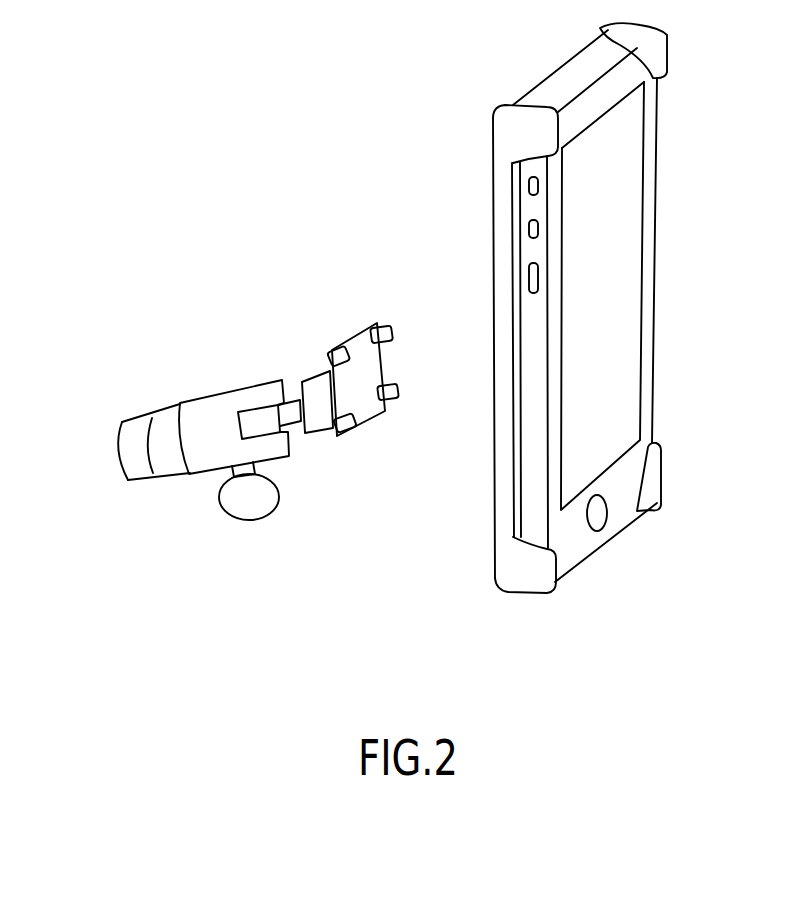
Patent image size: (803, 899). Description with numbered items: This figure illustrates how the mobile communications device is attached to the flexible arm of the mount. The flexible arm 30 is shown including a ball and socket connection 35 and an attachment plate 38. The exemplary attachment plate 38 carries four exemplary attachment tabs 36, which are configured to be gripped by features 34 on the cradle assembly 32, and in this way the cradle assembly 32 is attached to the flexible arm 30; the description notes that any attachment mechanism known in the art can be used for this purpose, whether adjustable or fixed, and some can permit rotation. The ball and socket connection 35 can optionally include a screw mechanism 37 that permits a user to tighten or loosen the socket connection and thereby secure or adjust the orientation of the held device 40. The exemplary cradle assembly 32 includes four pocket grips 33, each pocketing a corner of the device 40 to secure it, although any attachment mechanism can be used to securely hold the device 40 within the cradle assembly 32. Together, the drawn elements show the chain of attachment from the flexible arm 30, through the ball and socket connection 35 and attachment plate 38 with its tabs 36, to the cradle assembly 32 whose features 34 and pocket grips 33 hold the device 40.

The flexible arm 30 is at (132, 434).
The cradle assembly 32 is at (575, 322).
The pocket grip 33 is at (506, 132).
The features 34 is at (493, 270).
The ball and socket connection 35 is at (240, 404).
The attachment tab 36 is at (343, 347).
The screw mechanism 37 is at (251, 502).
The attachment plate 38 is at (350, 383).
The device 40 is at (625, 369).